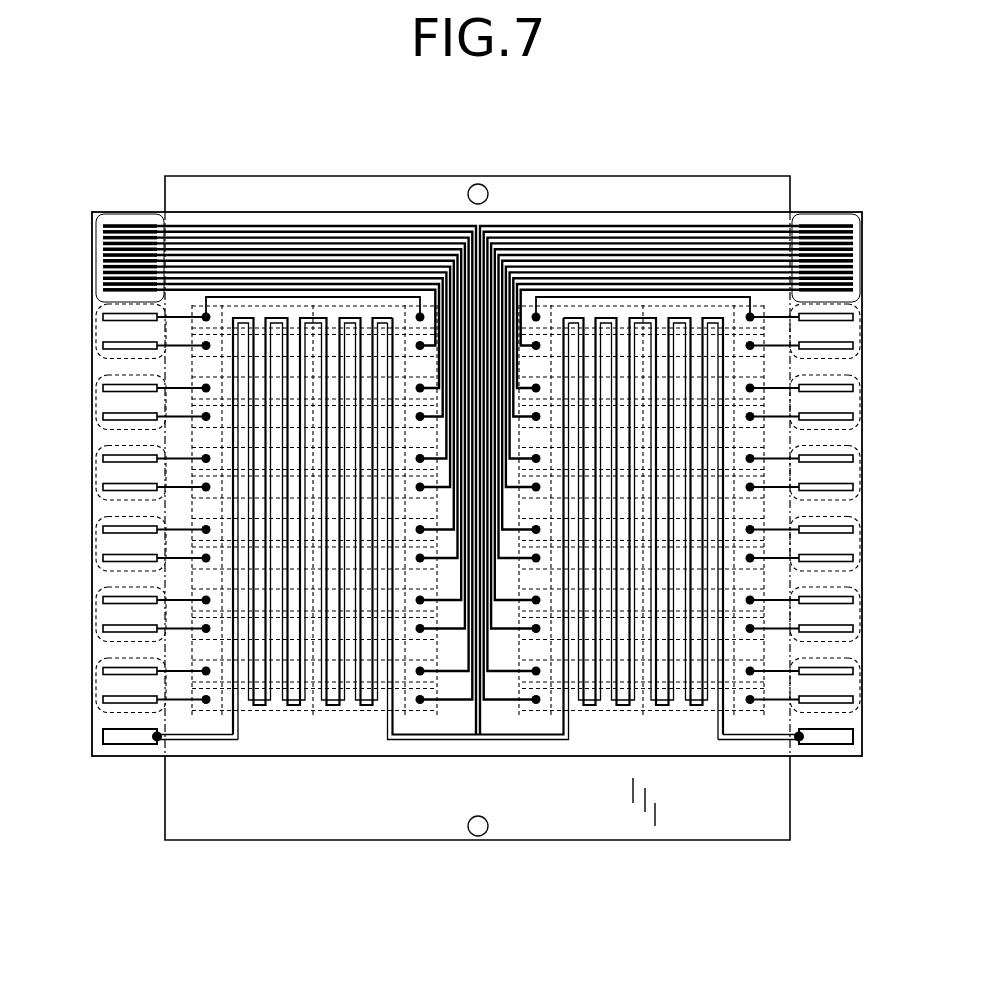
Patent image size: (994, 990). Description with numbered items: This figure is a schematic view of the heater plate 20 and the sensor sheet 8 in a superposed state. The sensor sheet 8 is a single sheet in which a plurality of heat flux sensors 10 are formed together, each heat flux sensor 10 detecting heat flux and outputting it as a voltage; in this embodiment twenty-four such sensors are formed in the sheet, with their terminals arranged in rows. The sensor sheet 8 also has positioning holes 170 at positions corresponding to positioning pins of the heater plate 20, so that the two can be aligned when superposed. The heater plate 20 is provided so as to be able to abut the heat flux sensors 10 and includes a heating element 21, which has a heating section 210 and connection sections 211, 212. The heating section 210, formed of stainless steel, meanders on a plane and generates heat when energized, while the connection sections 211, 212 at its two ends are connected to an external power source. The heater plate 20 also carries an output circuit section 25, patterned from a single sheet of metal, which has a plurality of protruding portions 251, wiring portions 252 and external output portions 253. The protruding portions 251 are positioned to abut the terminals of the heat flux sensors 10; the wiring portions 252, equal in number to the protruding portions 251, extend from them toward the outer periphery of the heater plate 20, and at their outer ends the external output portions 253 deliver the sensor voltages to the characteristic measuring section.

The sensor sheet 8 is at (396, 172).
The heater plate 20 is at (233, 207).
The positioning holes 170 is at (480, 184).
The output circuit section 25 is at (852, 300).
The external output portions 253 is at (121, 210).
The wiring portions 252 is at (303, 305).
The protruding portions 251 is at (222, 757).
The heat flux sensor 10 is at (477, 508).
The heating section 210 is at (333, 707).
The heating element 21 is at (505, 742).
The connection section 211 is at (113, 745).
The connection section 212 is at (840, 745).